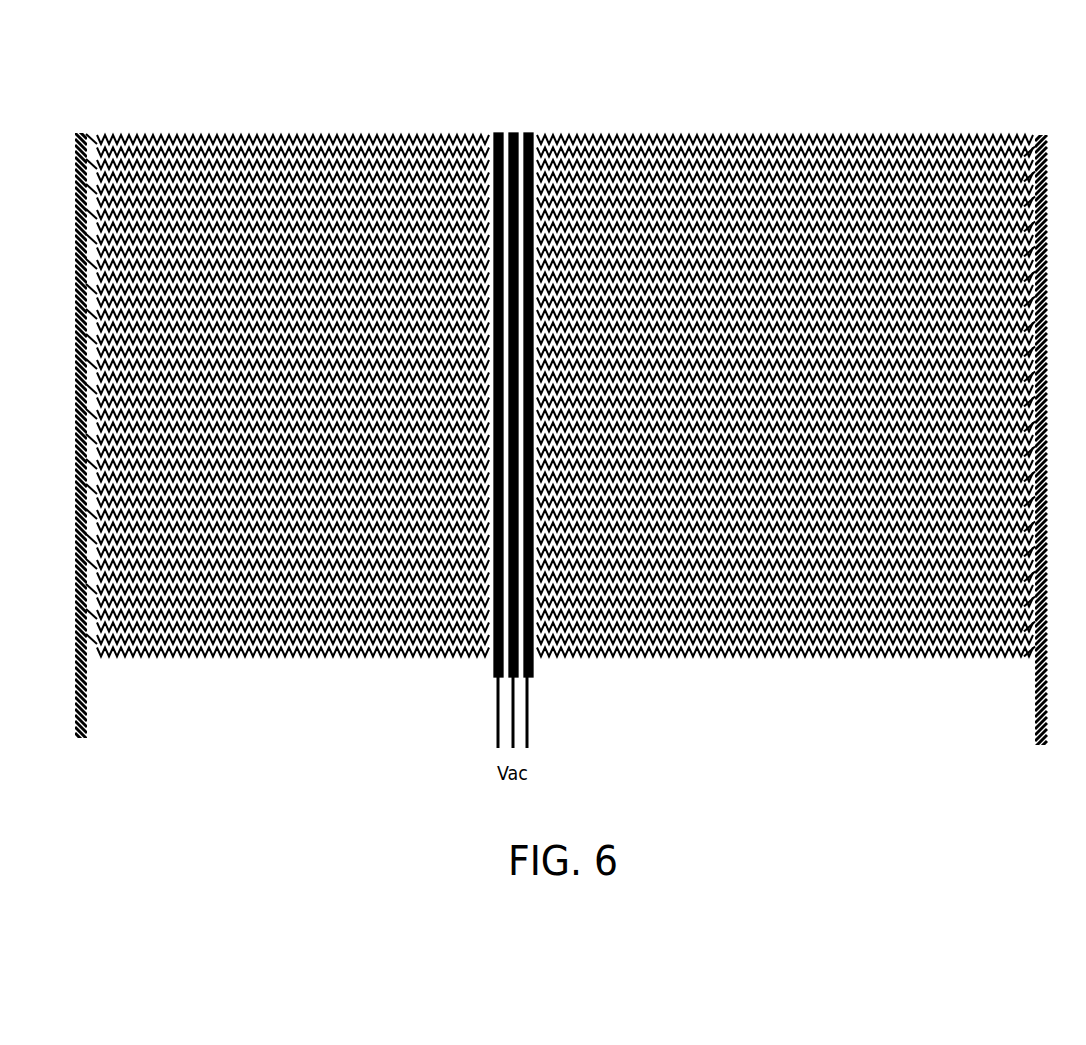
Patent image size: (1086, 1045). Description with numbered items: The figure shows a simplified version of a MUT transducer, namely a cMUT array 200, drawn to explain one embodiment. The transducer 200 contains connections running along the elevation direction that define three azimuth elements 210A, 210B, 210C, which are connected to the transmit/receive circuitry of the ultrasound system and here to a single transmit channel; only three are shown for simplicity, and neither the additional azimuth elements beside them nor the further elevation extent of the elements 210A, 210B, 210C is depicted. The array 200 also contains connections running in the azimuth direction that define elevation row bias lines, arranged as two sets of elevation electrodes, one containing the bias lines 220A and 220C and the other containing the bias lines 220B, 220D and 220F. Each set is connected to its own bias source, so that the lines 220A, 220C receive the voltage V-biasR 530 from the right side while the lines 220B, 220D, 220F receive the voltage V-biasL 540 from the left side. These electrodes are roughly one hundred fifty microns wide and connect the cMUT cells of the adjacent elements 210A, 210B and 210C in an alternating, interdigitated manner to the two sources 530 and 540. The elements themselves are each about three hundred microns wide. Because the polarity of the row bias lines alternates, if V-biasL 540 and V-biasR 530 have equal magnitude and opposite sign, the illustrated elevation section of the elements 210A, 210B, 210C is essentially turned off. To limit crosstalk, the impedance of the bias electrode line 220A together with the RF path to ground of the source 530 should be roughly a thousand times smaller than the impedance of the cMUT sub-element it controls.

The transducer 200 is at (747, 110).
The azimuth element 210A is at (489, 688).
The azimuth element 210B is at (514, 120).
The azimuth element 210C is at (542, 688).
The bias electrode line 220A is at (1022, 136).
The elevation row bias line 220B is at (102, 158).
The elevation row bias line 220C is at (1024, 179).
The elevation row bias line 220D is at (178, 204).
The elevation row bias line 220F is at (189, 354).
The bias source V-biasR 530 is at (1043, 475).
The bias source V-biasL 540 is at (79, 474).